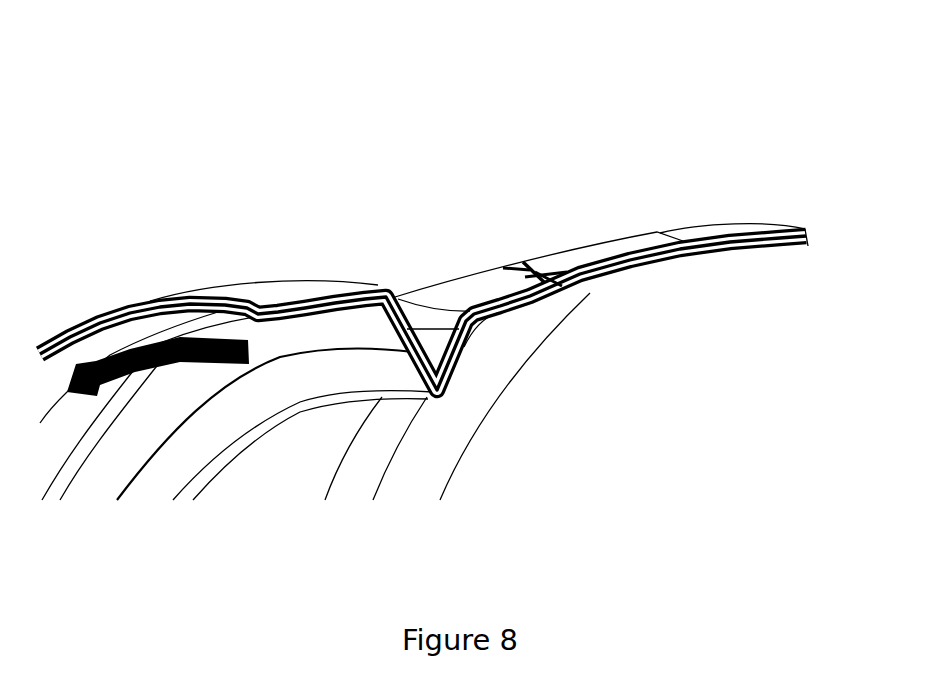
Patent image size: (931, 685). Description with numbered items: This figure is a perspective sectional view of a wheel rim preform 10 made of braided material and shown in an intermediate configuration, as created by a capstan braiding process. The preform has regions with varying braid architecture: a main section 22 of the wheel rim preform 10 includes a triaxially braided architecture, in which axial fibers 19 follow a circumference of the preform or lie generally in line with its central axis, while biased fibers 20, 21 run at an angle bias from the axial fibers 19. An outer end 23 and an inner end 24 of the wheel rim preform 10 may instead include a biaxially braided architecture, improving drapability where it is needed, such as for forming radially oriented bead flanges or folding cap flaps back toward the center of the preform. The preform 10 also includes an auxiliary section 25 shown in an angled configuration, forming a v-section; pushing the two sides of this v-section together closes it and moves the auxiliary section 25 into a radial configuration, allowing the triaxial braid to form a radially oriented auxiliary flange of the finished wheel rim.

The wheel rim preform 10 is at (778, 123).
The axial fibers 19 is at (507, 265).
The biased fibers 20 is at (521, 263).
The biased fibers 21 is at (507, 278).
The main section 22 is at (332, 287).
The outer end 23 is at (267, 297).
The inner end 24 is at (747, 233).
The auxiliary section 25 is at (445, 397).